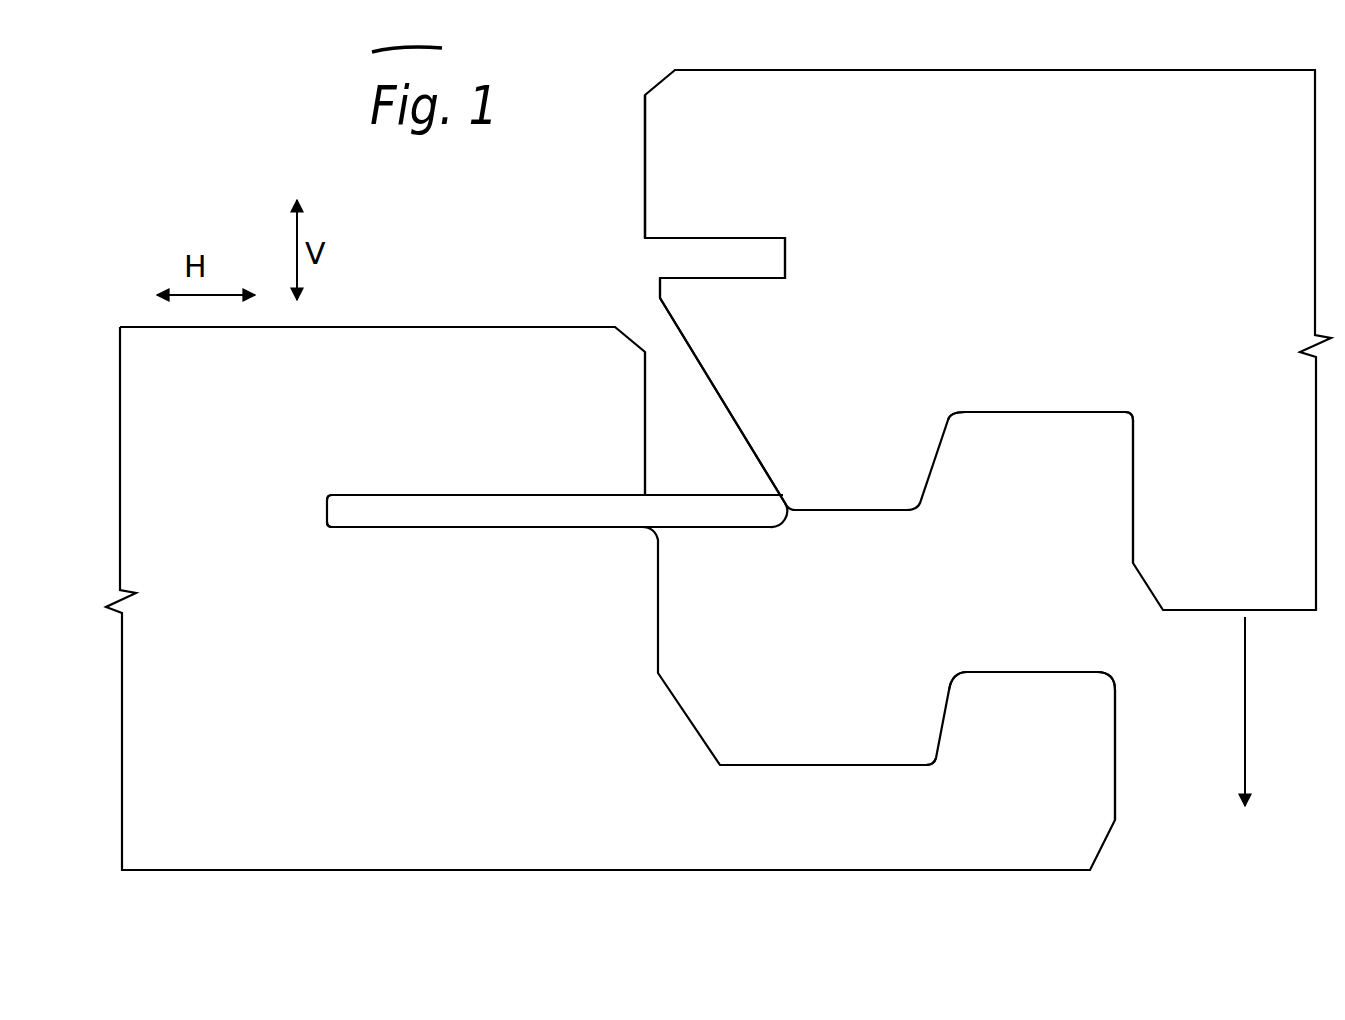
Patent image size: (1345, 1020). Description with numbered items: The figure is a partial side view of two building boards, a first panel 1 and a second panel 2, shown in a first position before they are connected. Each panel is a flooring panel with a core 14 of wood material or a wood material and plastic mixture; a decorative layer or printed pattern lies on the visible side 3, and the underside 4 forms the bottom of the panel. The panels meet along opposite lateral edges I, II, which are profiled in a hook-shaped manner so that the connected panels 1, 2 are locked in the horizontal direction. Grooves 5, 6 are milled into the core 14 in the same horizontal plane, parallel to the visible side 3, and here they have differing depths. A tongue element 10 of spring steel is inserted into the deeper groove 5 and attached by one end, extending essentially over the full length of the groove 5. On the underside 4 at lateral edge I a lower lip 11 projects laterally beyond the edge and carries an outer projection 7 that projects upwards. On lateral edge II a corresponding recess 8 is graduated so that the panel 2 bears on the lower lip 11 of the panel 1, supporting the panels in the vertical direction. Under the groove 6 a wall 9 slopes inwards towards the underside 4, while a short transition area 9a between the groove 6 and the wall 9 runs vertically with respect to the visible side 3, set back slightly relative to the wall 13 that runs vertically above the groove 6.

The panel 1 is at (171, 403).
The panel 2 is at (706, 125).
The visible side 3 is at (377, 324).
The underside 4 is at (1281, 619).
The groove 5 is at (330, 532).
The groove 6 is at (763, 258).
The outer projection 7 is at (1037, 672).
The recess 8 is at (1047, 427).
The wall 9 is at (730, 407).
The transition area 9a is at (656, 285).
The tongue element 10 is at (565, 512).
The lower lip 11 is at (828, 790).
The wall 13 is at (643, 141).
The core 14 is at (1229, 150).
The lateral edge I is at (645, 423).
The lateral edge II is at (647, 203).